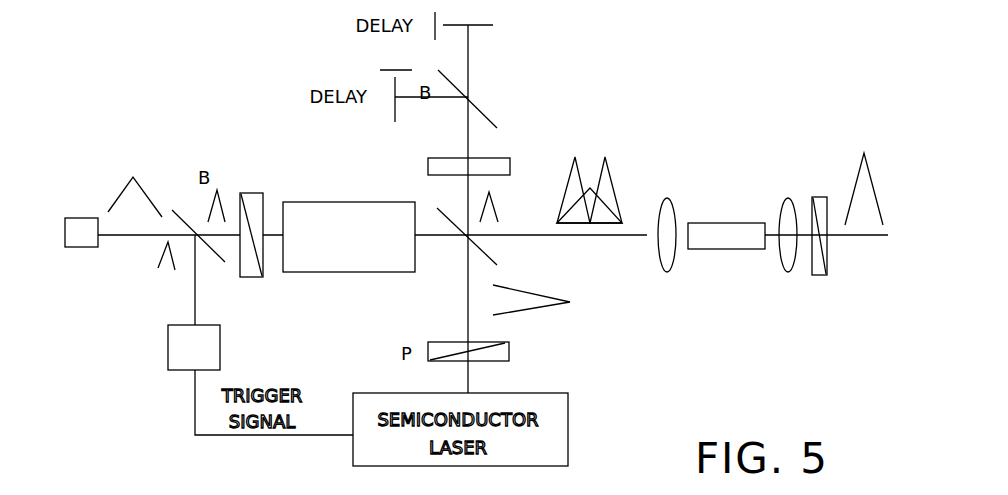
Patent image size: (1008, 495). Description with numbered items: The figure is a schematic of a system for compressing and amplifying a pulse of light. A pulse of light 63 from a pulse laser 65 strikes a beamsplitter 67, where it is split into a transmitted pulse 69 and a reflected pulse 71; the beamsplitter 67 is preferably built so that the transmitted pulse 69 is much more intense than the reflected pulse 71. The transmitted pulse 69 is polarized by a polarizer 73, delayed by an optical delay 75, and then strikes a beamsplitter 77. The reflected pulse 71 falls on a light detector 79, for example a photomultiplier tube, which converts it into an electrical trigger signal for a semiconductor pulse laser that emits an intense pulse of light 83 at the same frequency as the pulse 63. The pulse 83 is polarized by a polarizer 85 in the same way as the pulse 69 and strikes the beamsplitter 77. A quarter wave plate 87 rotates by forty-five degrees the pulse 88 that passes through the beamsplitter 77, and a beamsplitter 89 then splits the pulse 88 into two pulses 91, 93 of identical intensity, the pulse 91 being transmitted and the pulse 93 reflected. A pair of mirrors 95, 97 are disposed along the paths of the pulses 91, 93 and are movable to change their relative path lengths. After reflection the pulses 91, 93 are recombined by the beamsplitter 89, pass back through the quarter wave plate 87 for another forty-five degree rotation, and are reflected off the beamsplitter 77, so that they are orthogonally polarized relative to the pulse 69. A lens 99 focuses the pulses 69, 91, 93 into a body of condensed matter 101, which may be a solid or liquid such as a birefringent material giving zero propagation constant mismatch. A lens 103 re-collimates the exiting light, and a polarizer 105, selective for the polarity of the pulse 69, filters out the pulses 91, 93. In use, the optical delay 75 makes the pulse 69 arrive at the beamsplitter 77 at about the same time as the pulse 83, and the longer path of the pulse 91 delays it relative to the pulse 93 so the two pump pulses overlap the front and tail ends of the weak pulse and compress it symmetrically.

The pulse of light 63 is at (122, 188).
The pulse laser 65 is at (89, 250).
The beamsplitter 67 is at (190, 227).
The transmitted pulse 69 is at (223, 198).
The reflected pulse 71 is at (160, 252).
The polarizer 73 is at (243, 280).
The optical delay 75 is at (358, 275).
The beamsplitter 77 is at (488, 257).
The light detector 79 is at (220, 335).
The intense pulse of light 83 is at (520, 308).
The polarizer 85 is at (512, 353).
The quarter wave plate 87 is at (428, 165).
The pulse 88 is at (500, 212).
The beamsplitter 89 is at (453, 82).
The transmitted pulse 91 is at (567, 173).
The reflected pulse 93 is at (610, 172).
The mirror 95 is at (483, 23).
The mirror 97 is at (393, 104).
The lens 99 is at (665, 272).
The body of condensed matter 101 is at (737, 250).
The lens 103 is at (790, 273).
The polarizer 105 is at (817, 275).